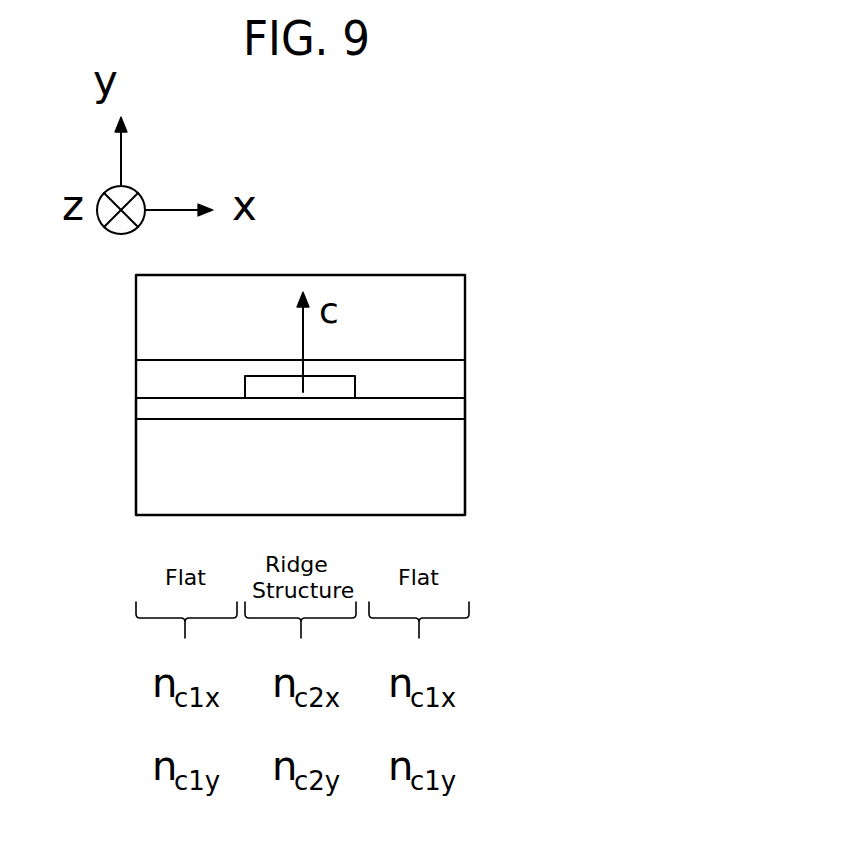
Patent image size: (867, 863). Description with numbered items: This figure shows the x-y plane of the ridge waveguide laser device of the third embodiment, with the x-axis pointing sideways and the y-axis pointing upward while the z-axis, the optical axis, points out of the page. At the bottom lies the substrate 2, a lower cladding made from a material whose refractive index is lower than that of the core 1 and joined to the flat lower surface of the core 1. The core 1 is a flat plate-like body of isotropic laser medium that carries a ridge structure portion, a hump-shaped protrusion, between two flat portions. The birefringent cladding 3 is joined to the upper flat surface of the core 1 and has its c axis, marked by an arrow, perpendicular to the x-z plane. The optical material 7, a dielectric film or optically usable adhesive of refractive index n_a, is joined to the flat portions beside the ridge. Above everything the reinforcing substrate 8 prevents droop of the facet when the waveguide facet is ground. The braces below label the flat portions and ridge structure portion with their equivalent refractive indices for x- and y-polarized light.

The core 1 is at (449, 415).
The substrate 2 is at (449, 465).
The cladding 3 is at (348, 387).
The optical material 7 is at (449, 382).
The substrate 8 is at (167, 335).